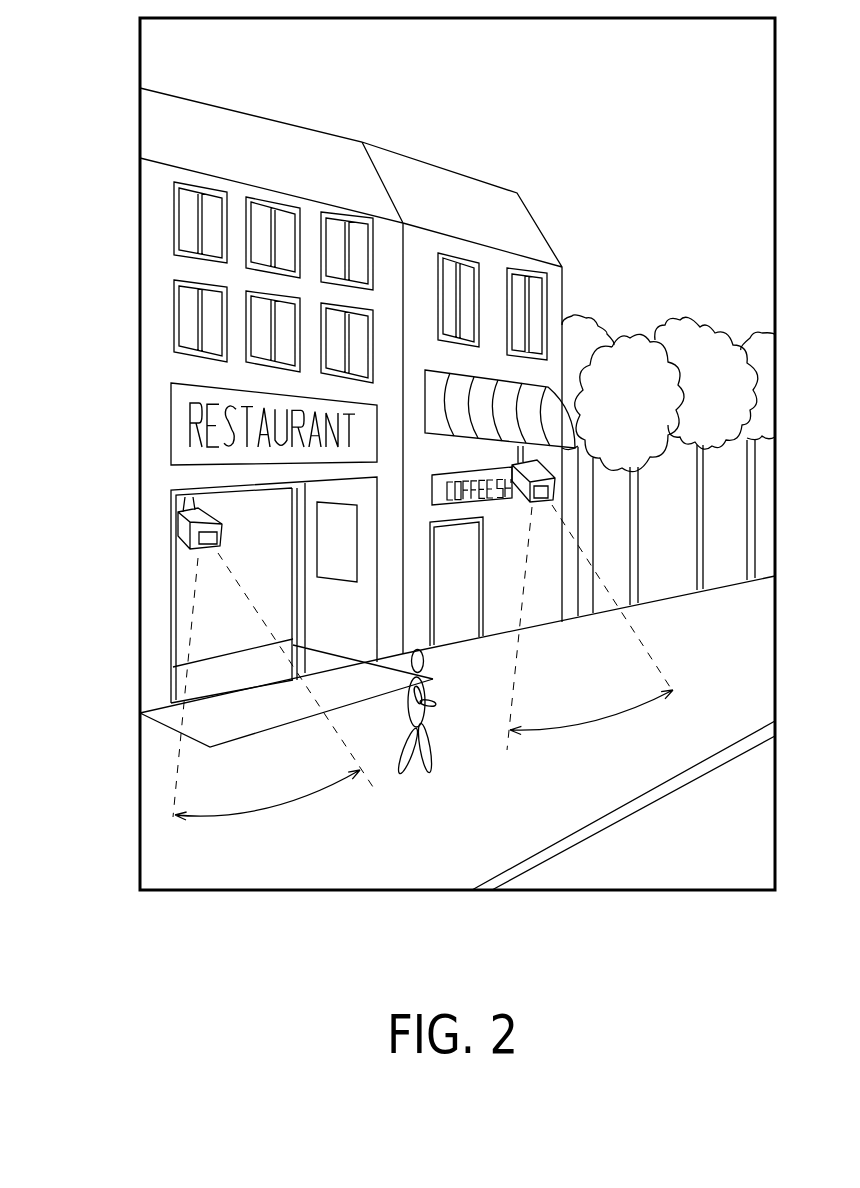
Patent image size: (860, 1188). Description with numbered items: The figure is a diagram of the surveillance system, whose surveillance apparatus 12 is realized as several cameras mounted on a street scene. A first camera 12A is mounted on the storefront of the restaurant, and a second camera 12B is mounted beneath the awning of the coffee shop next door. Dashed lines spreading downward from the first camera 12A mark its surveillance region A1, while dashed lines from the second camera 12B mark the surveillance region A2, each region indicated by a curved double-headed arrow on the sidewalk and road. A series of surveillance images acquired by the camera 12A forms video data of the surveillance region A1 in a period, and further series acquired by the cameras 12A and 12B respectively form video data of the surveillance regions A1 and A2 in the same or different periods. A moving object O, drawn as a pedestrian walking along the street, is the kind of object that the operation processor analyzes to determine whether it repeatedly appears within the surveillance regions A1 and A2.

The surveillance apparatus 12 is at (359, 542).
The camera 12A is at (180, 520).
The camera 12B is at (540, 478).
The surveillance region A1 is at (267, 808).
The surveillance region A2 is at (591, 725).
The moving object O is at (433, 760).